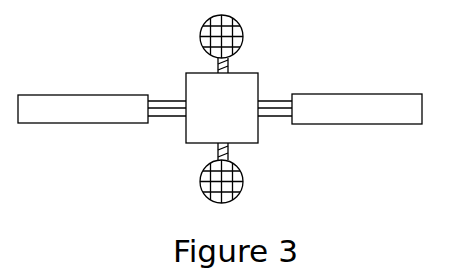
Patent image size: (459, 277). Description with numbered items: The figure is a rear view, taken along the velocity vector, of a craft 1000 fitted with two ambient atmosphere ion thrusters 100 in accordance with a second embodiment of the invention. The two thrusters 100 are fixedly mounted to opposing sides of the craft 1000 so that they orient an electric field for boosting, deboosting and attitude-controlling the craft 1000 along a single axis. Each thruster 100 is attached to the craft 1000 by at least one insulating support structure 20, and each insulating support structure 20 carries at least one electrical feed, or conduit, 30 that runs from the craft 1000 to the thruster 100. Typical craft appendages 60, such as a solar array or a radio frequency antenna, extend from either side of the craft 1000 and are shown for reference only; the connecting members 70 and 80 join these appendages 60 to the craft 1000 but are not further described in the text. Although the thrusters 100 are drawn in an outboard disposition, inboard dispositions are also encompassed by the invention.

The craft 1000 is at (240, 124).
The craft appendages 60 is at (93, 118).
The connector 70 is at (166, 100).
The connector lower element 80 is at (167, 117).
The insulating support structure 20 is at (215, 61).
The electrical feed 30 is at (228, 62).
The ambient atmosphere ion thruster 100 is at (191, 37).